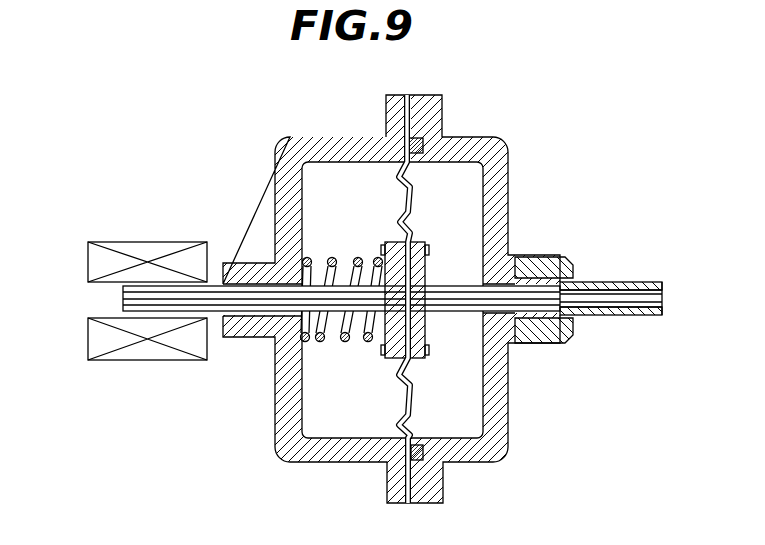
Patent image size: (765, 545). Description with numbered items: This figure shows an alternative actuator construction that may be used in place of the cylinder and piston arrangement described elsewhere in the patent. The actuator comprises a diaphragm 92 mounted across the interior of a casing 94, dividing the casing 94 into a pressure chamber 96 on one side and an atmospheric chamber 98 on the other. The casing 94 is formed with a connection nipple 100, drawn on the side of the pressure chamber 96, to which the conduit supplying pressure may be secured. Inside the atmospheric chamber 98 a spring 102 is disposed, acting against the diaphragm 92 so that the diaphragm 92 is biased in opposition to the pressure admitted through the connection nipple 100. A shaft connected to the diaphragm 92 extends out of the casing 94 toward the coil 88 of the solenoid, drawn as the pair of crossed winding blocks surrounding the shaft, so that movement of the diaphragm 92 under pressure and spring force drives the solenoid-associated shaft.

The coil 88 is at (97, 341).
The diaphragm 92 is at (405, 403).
The casing 94 is at (278, 173).
The pressure chamber 96 is at (462, 216).
The atmospheric chamber 98 is at (357, 216).
The connection nipple 100 is at (545, 337).
The spring 102 is at (305, 343).